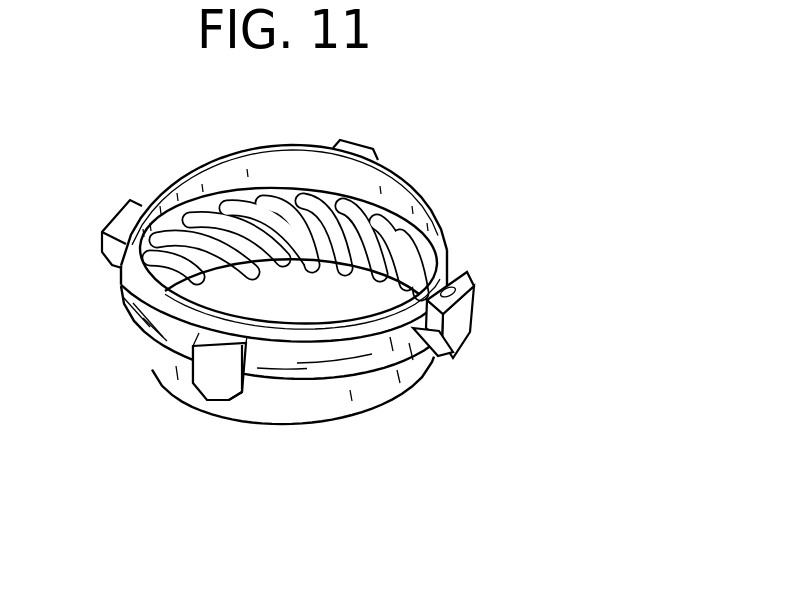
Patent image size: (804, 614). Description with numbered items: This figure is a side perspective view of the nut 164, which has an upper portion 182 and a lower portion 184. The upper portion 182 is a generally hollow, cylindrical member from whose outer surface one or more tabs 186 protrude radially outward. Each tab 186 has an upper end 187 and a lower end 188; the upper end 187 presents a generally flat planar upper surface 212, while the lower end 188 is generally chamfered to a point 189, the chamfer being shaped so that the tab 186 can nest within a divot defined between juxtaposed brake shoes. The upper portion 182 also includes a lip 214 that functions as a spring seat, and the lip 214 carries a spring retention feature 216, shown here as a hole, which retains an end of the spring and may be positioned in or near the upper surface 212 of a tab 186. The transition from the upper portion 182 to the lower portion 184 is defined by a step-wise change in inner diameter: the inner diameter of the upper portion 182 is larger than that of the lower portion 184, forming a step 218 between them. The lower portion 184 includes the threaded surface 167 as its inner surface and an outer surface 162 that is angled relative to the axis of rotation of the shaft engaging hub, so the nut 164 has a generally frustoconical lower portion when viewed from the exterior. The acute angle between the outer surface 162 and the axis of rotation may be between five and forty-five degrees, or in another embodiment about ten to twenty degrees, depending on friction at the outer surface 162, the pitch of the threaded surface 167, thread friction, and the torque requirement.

The outer surface 162 is at (363, 400).
The nut 164 is at (511, 224).
The threaded surface 167 is at (250, 222).
The upper portion 182 is at (118, 292).
The lower portion 184 is at (146, 338).
The tabs 186 is at (127, 199).
The upper end 187 is at (250, 350).
The lower end 188 is at (228, 402).
The point 189 is at (212, 380).
The upper surface 212 is at (205, 340).
The lip 214 is at (407, 307).
The spring retention feature 216 is at (462, 263).
The step 218 is at (267, 183).